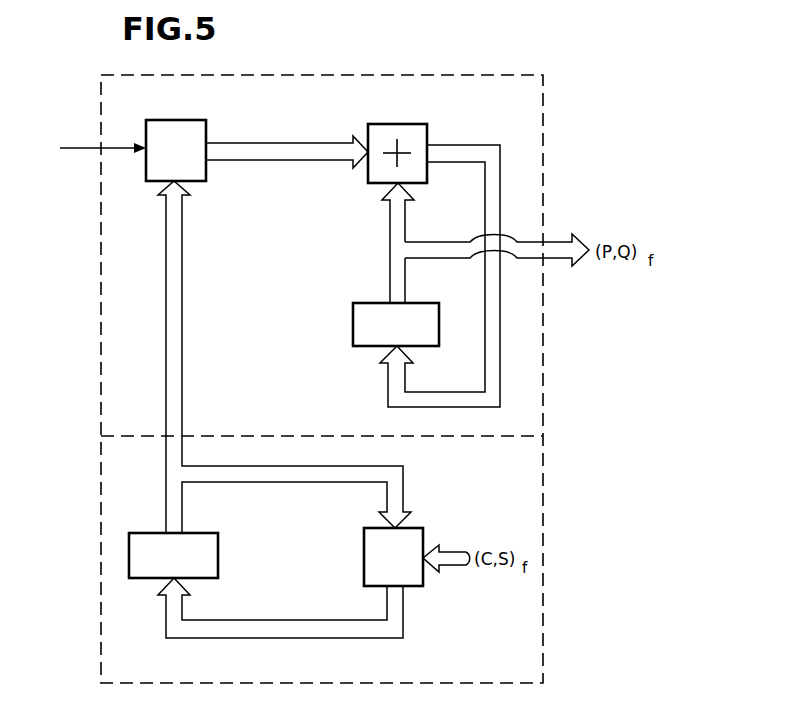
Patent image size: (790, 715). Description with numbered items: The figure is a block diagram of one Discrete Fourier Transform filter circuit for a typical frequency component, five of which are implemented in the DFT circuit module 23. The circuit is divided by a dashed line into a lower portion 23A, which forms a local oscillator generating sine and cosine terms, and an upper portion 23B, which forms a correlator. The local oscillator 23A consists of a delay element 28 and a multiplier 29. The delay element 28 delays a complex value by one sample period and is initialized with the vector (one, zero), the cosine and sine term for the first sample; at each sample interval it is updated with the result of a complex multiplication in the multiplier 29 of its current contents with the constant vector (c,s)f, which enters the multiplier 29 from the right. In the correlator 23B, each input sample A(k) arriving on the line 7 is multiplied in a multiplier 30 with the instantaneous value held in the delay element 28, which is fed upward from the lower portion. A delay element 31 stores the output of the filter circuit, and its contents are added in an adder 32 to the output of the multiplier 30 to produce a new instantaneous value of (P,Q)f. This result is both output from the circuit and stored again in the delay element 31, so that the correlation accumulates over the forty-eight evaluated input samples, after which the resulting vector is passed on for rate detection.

The line 7 is at (78, 148).
The DFT circuit module 23 is at (471, 70).
The lower portion 23A is at (99, 608).
The upper portion 23B is at (101, 362).
The delay element 28 is at (218, 548).
The multiplier 29 is at (366, 550).
The multiplier 30 is at (198, 133).
The delay element 31 is at (353, 306).
The adder 32 is at (372, 125).